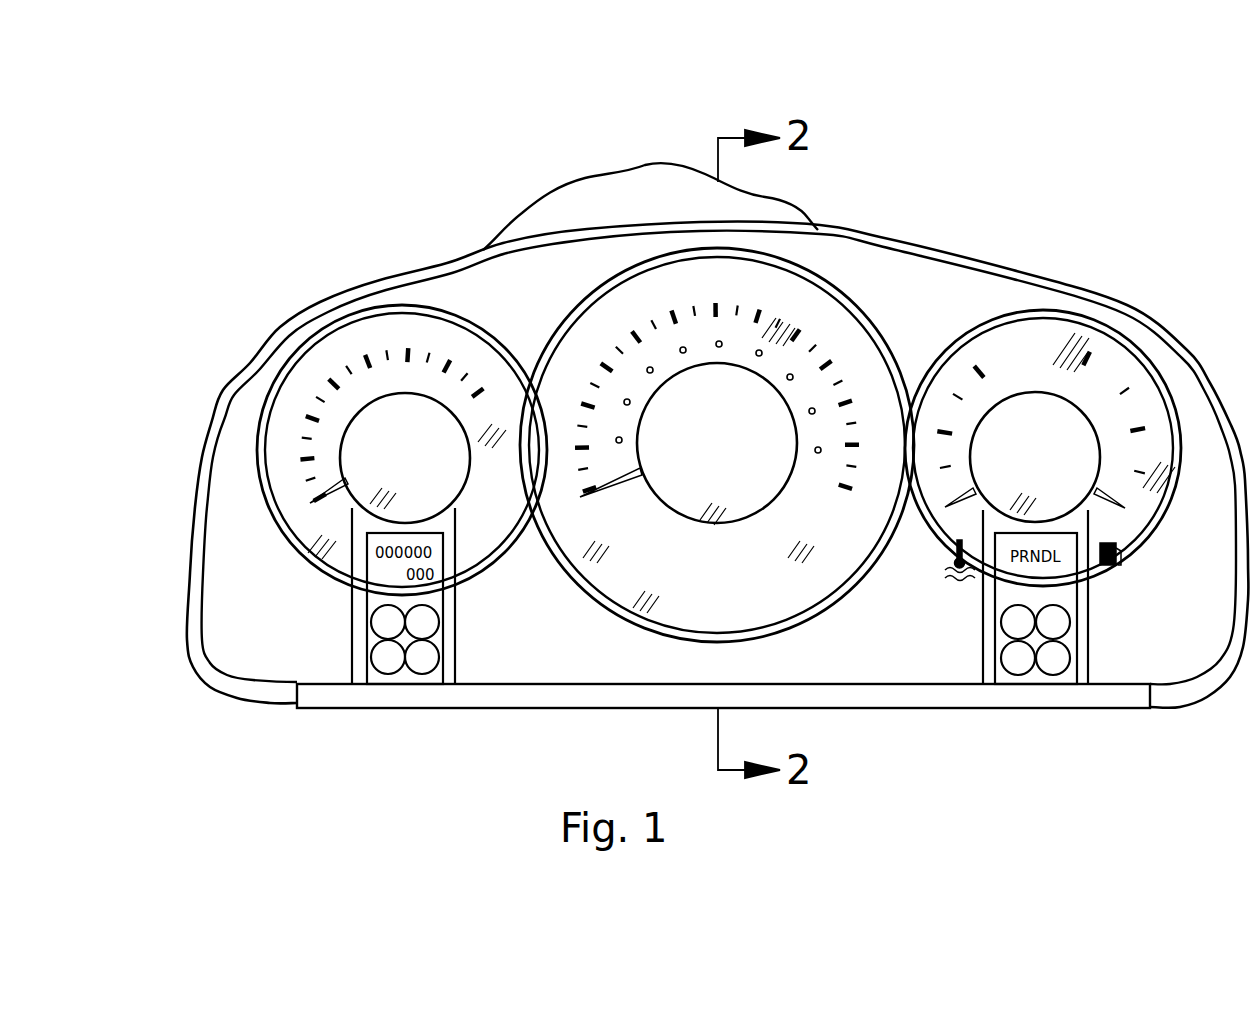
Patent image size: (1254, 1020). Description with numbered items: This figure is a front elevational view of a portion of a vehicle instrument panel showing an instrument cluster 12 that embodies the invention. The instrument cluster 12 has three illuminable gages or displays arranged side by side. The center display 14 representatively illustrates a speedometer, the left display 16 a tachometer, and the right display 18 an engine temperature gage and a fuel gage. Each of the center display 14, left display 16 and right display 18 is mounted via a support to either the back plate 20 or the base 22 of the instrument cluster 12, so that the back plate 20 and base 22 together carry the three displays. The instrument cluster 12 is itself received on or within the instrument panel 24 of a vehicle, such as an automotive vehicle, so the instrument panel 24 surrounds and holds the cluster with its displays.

The instrument cluster 12 is at (1075, 155).
The center display 14 is at (822, 255).
The left display 16 is at (440, 285).
The right display 18 is at (1112, 308).
The back plate 20 is at (905, 283).
The base 22 is at (947, 700).
The instrument panel 24 is at (646, 213).